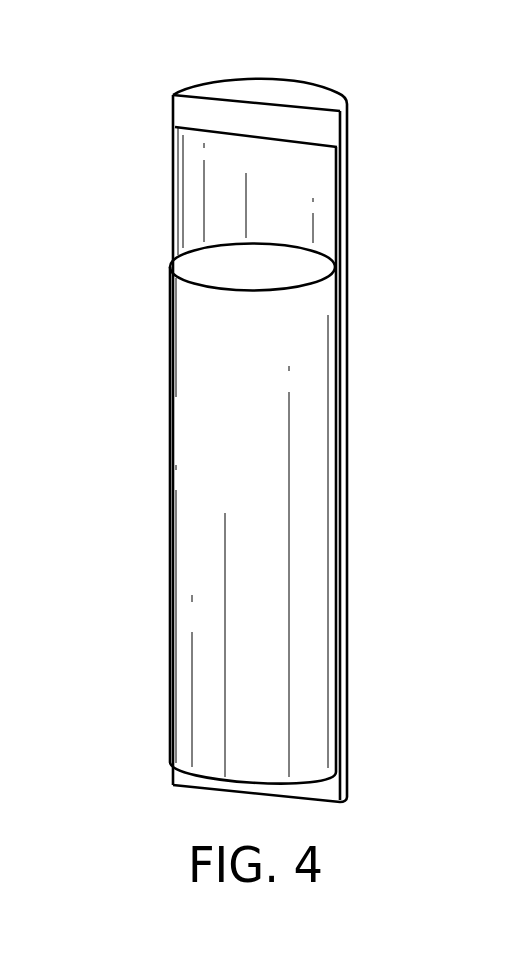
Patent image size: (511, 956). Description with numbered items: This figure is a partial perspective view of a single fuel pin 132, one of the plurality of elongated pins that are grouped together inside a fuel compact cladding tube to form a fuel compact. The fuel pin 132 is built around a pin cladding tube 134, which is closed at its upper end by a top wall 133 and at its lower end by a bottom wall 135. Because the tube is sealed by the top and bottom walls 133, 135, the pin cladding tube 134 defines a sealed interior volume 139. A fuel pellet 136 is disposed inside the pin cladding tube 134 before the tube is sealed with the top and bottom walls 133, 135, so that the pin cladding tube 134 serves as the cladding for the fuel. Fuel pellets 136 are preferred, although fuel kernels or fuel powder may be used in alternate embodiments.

The fuel pin 132 is at (137, 190).
The top wall 133 is at (283, 92).
The pin cladding tube 134 is at (345, 270).
The bottom wall 135 is at (207, 790).
The fuel pellet 136 is at (268, 368).
The sealed interior volume 139 is at (273, 192).